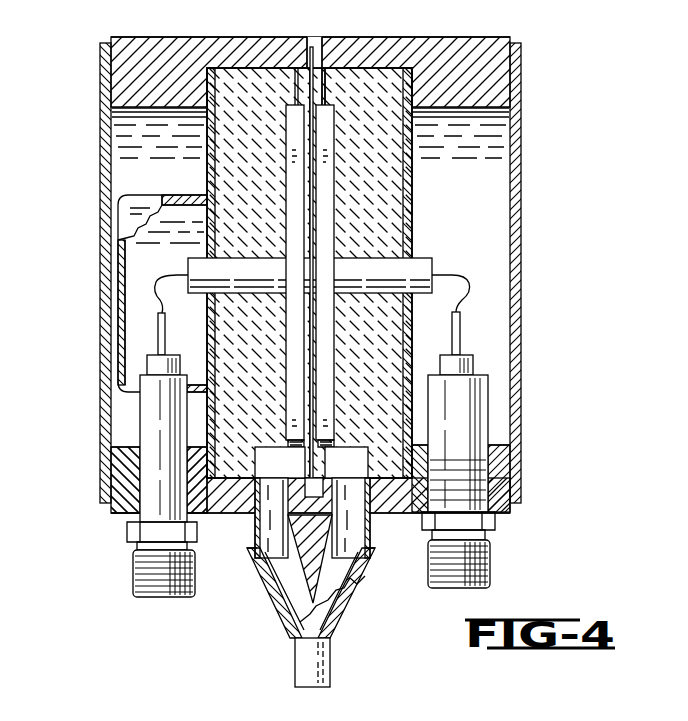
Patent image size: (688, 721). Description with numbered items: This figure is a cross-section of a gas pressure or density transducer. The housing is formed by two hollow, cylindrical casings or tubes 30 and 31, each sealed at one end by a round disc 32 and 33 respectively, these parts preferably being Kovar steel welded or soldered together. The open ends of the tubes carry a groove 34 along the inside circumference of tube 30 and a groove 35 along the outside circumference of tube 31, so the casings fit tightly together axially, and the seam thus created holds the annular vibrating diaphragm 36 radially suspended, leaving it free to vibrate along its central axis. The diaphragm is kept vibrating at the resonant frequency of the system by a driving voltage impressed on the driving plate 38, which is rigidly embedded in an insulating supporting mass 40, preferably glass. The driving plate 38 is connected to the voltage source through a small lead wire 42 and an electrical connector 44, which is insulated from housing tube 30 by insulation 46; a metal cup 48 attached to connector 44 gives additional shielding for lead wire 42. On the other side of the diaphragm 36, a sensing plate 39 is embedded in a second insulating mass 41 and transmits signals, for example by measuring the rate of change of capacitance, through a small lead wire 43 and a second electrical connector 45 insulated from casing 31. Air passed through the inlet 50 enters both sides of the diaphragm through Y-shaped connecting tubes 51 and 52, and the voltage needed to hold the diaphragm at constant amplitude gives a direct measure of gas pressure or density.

The hollow cylindrical casing tube 30 is at (232, 37).
The hollow cylindrical casing tube 31 is at (478, 37).
The round disc 32 is at (100, 118).
The round disc 33 is at (522, 126).
The groove 34 is at (307, 43).
The groove 35 is at (323, 53).
The vibrating diaphragm 36 is at (325, 88).
The driving plate 38 is at (290, 233).
The sensing plate 39 is at (335, 246).
The insulating supporting mass 40 is at (228, 190).
The insulating mass 41 is at (400, 207).
The lead wire 42 is at (178, 273).
The lead wire 43 is at (463, 270).
The electrical connector 44 is at (147, 421).
The second electrical connector 45 is at (488, 405).
The insulation 46 is at (123, 520).
The metal cup 48 is at (120, 322).
The inlet 50 is at (295, 658).
The Y-shaped connecting tube 51 is at (372, 535).
The Y-shaped connecting tube 52 is at (257, 535).